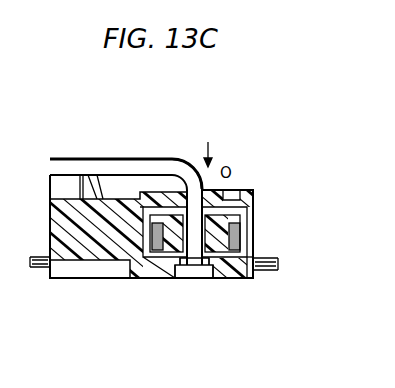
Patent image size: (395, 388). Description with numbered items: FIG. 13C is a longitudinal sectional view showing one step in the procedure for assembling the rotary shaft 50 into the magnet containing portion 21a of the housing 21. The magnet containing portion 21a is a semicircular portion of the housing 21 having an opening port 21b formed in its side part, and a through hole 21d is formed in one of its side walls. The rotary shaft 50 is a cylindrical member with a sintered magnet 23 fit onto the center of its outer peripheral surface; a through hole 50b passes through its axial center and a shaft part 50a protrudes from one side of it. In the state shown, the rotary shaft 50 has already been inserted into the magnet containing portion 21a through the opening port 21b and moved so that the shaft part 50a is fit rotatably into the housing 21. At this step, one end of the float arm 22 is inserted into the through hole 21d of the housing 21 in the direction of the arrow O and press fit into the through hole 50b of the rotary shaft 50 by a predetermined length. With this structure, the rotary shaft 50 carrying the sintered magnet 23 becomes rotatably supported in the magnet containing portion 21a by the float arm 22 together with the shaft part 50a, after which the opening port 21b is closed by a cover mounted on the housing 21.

The housing 21 is at (96, 282).
The magnet containing portion 21a is at (243, 217).
The opening port 21b is at (256, 243).
The through hole 21d is at (186, 192).
The float arm 22 is at (68, 157).
The sintered magnet 23 is at (255, 236).
The rotary shaft 50 is at (231, 204).
The shaft part 50a is at (232, 283).
The through hole 50b is at (175, 283).